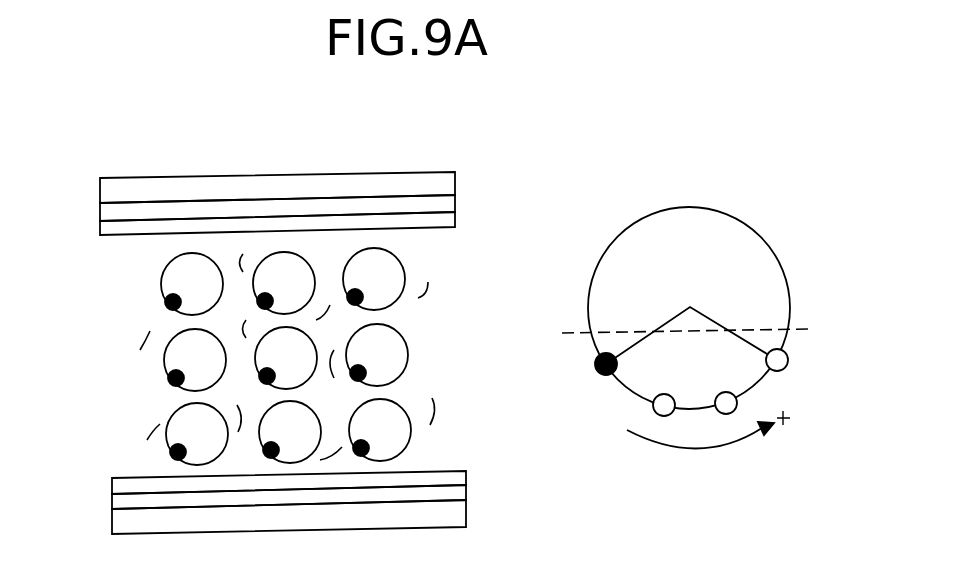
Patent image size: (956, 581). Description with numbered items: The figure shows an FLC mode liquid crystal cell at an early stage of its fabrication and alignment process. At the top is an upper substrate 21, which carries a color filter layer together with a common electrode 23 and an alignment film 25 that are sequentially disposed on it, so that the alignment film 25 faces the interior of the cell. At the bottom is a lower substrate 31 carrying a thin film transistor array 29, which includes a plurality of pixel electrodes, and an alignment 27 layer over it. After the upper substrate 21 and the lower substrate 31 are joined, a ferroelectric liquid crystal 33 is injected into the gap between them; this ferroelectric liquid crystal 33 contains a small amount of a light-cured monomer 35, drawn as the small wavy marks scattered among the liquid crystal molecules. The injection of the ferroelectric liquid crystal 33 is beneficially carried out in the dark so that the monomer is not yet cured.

The upper substrate 21 is at (457, 178).
The common electrode 23 is at (457, 201).
The alignment film 25 is at (457, 219).
The alignment 27 is at (468, 475).
The thin film transistor (TFT) array 29 is at (468, 489).
The lower substrate 31 is at (468, 517).
The ferroelectric liquid crystal 33 is at (170, 378).
The light-cured monomer 35 is at (138, 343).